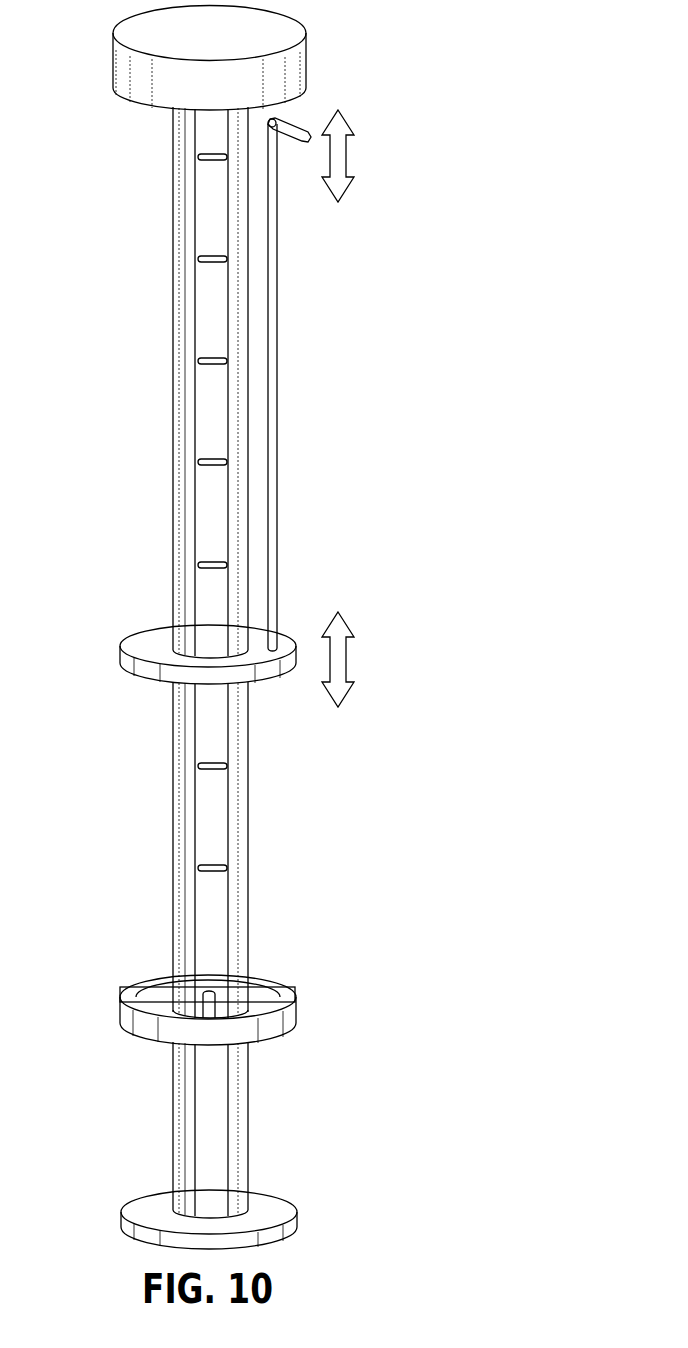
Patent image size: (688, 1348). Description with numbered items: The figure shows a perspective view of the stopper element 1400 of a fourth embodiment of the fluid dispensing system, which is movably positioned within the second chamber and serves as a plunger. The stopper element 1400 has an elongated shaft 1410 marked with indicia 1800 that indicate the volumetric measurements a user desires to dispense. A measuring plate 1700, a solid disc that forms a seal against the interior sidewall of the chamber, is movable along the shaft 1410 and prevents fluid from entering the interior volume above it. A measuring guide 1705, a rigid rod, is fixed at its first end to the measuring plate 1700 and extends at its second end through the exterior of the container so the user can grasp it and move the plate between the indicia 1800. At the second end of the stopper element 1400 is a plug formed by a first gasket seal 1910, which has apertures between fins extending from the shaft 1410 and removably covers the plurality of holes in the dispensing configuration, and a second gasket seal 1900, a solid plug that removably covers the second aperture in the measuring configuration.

The stopper element 1400 is at (372, 135).
The shaft 1410 is at (243, 1103).
The measuring plate 1700 is at (128, 661).
The measuring guide 1705 is at (298, 120).
The indicia 1800 is at (180, 197).
The second gasket seal 1900 is at (295, 1222).
The first gasket seal 1910 is at (295, 1012).